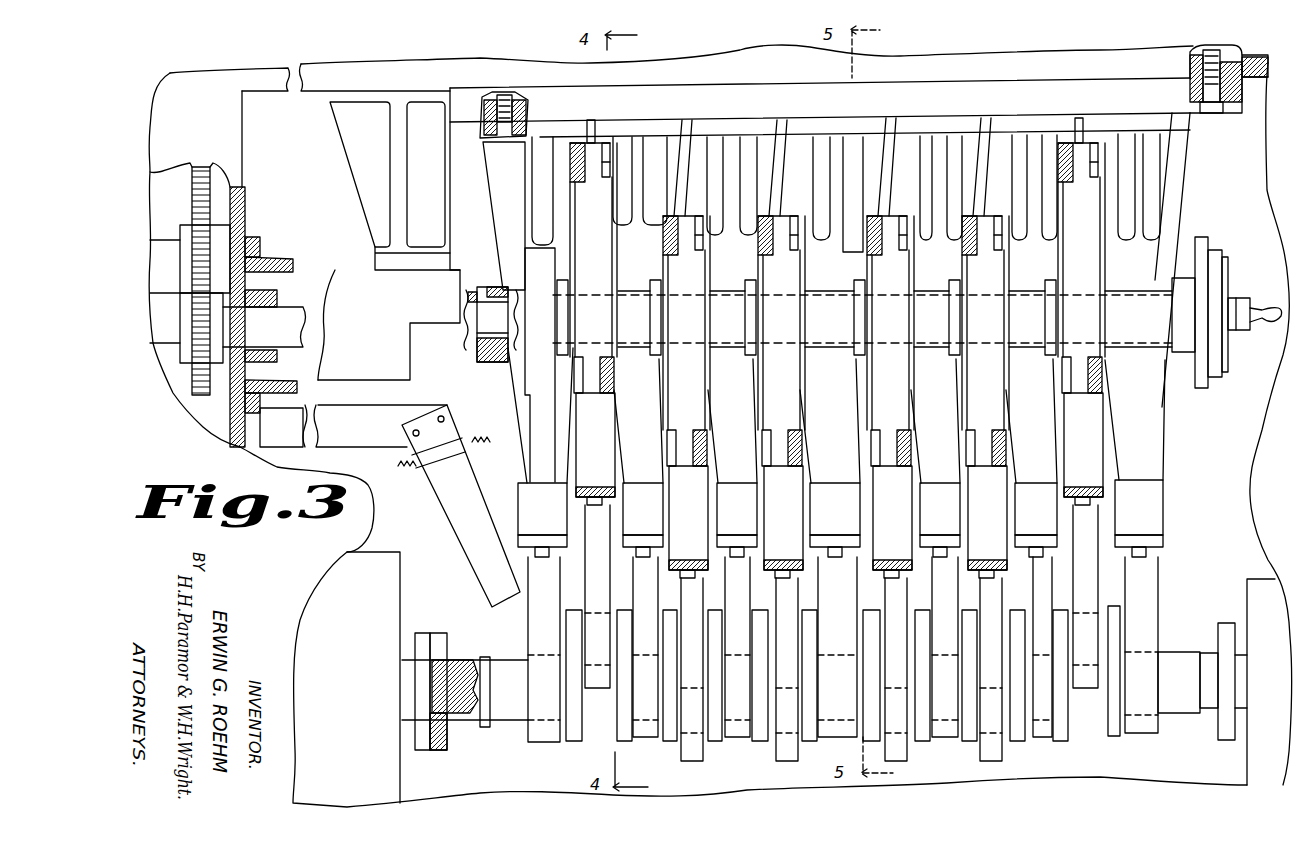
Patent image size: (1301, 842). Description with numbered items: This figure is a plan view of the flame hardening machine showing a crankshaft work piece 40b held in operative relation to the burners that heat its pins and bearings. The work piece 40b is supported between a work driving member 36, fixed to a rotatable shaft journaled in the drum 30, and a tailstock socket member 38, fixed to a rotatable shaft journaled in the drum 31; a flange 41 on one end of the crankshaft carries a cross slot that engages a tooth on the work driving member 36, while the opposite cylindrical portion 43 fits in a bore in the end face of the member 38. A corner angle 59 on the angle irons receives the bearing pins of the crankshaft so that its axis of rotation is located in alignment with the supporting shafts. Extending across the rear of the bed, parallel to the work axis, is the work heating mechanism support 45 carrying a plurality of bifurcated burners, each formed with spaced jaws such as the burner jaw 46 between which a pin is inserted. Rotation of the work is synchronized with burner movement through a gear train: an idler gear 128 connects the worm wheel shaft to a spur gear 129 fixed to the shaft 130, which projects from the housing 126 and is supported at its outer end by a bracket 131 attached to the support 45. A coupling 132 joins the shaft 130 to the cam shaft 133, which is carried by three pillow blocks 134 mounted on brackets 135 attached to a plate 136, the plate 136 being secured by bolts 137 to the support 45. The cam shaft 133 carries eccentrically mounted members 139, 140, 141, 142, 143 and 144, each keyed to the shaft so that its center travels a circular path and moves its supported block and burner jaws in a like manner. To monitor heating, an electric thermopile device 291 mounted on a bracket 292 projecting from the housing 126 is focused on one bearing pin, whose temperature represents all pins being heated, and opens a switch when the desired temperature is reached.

The drum 30 is at (393, 553).
The drum 31 is at (1249, 582).
The work driving member 36 is at (420, 635).
The tailstock socket member 38 is at (1227, 625).
The work piece 40b is at (933, 738).
The flange 41 is at (440, 635).
The cylindrical portion 43 is at (1207, 660).
The work heating mechanism support 45 is at (1240, 58).
The burner jaw 46 is at (1150, 574).
The corner angle 59 is at (633, 708).
The housing 126 is at (245, 108).
The idler gear 128 is at (213, 165).
The spur gear 129 is at (200, 398).
The shaft 130 is at (318, 307).
The bracket 131 is at (357, 173).
The coupling 132 is at (488, 363).
The cam shaft 133 is at (518, 289).
The pillow block 134 is at (533, 260).
The bracket 135 is at (496, 175).
The plate 136 is at (1132, 88).
The bolt 137 is at (1212, 47).
The eccentrically mounted member 139 is at (593, 150).
The eccentrically mounted member 140 is at (684, 220).
The eccentrically mounted member 141 is at (780, 220).
The eccentrically mounted member 142 is at (889, 222).
The eccentrically mounted member 143 is at (983, 222).
The eccentrically mounted member 144 is at (1081, 148).
The electric thermopile device 291 is at (465, 530).
The bracket 292 is at (358, 397).